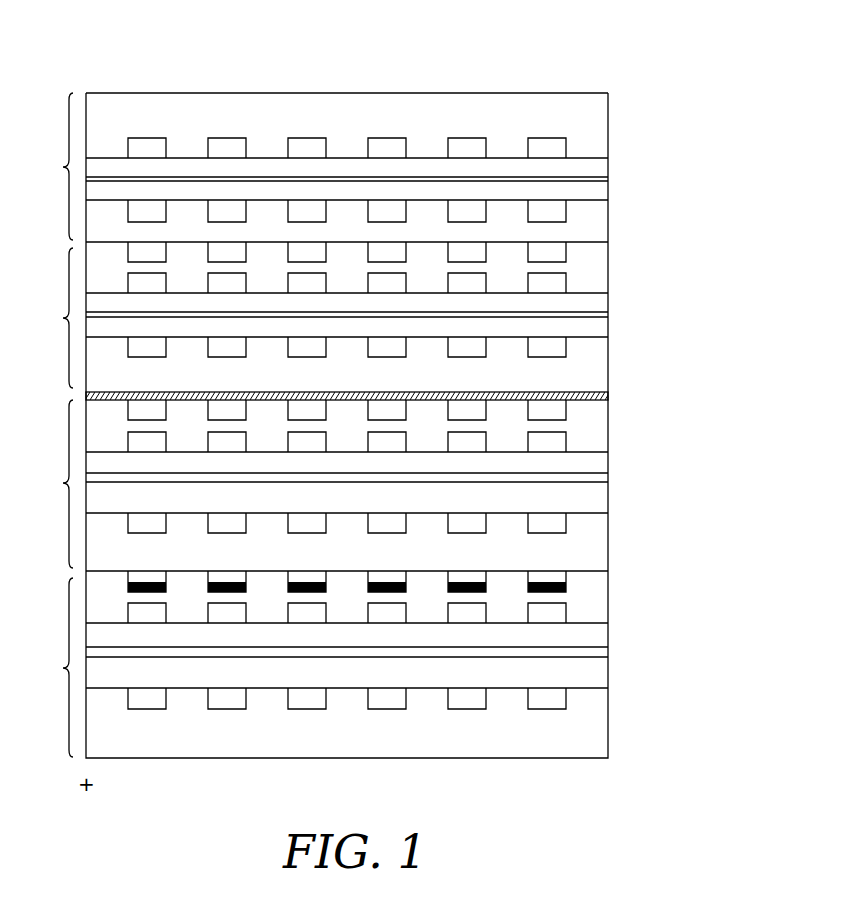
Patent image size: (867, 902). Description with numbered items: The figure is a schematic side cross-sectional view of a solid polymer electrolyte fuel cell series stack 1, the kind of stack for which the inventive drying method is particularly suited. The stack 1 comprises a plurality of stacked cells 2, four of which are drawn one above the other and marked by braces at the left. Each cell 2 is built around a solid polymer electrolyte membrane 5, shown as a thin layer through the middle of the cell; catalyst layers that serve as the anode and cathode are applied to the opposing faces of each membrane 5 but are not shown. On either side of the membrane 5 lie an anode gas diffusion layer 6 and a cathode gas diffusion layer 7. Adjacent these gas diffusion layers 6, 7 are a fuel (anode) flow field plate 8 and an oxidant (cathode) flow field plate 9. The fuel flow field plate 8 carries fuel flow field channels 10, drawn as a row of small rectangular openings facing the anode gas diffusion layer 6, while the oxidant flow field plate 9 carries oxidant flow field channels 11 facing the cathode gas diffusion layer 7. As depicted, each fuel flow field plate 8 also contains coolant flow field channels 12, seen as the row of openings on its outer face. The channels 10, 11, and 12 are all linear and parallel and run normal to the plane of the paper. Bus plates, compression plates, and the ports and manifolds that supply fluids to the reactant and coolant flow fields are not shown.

The stack 1 is at (648, 51).
The stacked cells 2 is at (59, 425).
The solid polymer electrolyte membrane 5 is at (600, 178).
The anode gas diffusion layer 6 is at (600, 167).
The cathode gas diffusion layer 7 is at (600, 195).
The fuel flow field plate 8 is at (602, 121).
The oxidant flow field plate 9 is at (600, 219).
The fuel flow field channels 10 is at (465, 140).
The oxidant flow field channels 11 is at (393, 212).
The coolant flow field channels 12 is at (312, 250).